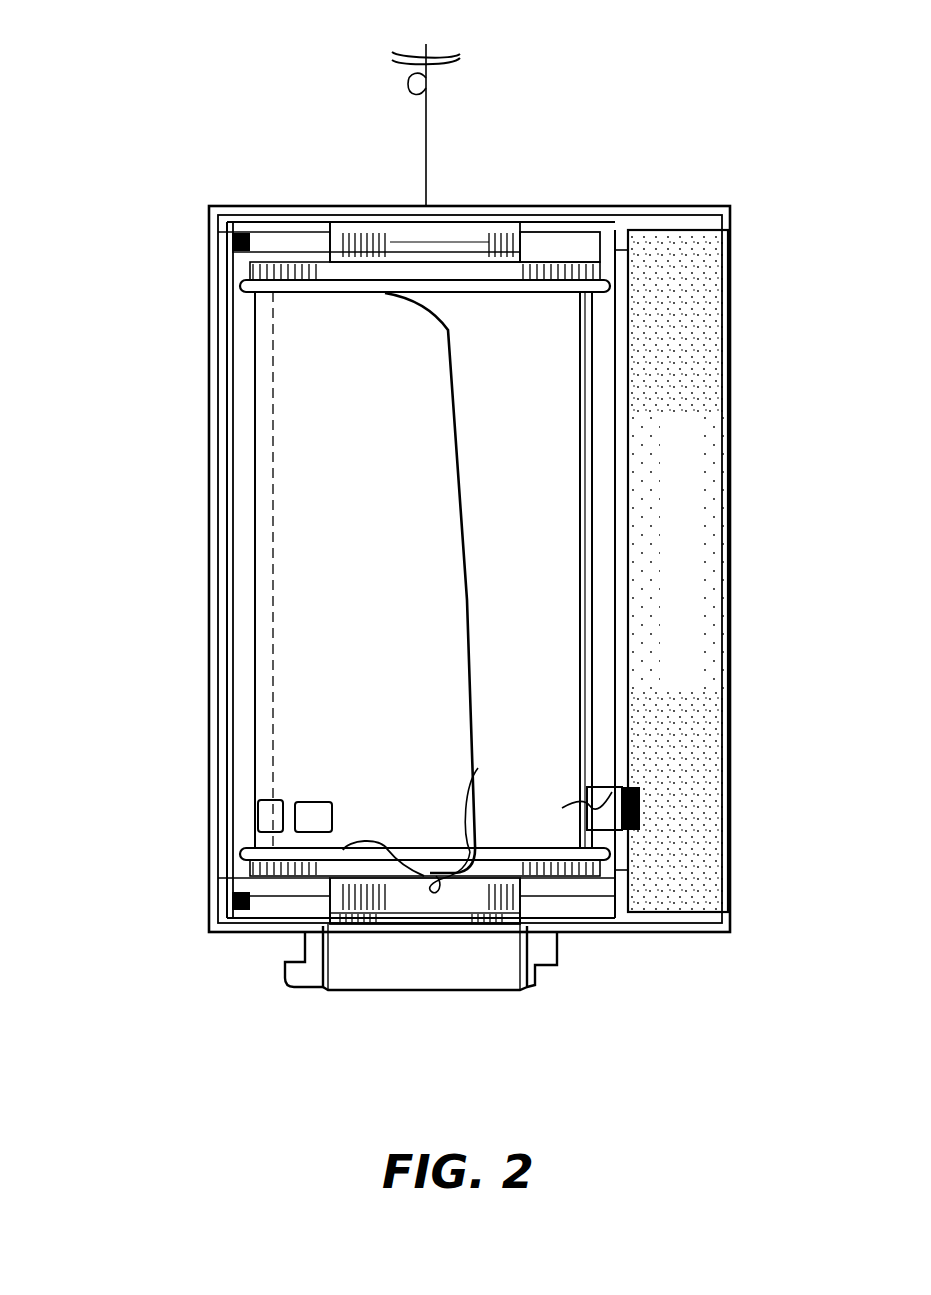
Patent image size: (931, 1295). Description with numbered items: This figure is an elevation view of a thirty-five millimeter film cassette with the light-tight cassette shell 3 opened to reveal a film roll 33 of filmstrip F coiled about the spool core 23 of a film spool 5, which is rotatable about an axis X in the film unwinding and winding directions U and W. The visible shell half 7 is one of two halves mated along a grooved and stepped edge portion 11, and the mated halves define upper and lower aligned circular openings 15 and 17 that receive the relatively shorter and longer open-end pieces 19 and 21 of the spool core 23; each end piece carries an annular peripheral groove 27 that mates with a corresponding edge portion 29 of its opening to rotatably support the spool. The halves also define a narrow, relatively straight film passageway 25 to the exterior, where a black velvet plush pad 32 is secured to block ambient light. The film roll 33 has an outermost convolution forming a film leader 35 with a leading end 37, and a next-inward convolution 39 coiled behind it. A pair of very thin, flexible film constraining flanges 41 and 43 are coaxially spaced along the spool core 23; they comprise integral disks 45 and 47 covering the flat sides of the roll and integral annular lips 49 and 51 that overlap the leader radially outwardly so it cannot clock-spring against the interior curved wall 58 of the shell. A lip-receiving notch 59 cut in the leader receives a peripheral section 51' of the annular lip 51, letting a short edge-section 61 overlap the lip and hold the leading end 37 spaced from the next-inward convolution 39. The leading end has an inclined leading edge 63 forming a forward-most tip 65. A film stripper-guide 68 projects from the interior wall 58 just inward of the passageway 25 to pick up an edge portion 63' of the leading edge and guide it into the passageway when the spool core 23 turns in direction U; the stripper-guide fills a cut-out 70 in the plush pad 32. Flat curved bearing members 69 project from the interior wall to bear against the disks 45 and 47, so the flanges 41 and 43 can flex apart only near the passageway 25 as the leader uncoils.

The cassette shell 3 is at (264, 203).
The film spool 5 is at (232, 650).
The shell half 7 is at (228, 206).
The grooved and stepped edge portion 11 is at (210, 336).
The upper circular opening 15 is at (492, 224).
The lower circular opening 17 is at (506, 930).
The shorter open-end piece 19 is at (352, 208).
The longer open-end piece 21 is at (345, 968).
The spool core 23 is at (358, 204).
The film passageway 25 is at (724, 434).
The annular peripheral groove 27 is at (400, 224).
The edge portion of opening 29 is at (488, 226).
The plush pad 32 is at (678, 300).
The film roll 33 is at (232, 597).
The film leader 35 is at (262, 506).
The leading end 37 is at (462, 612).
The next-inward convolution 39 is at (538, 540).
The upper film constraining flange 41 is at (224, 268).
The lower film constraining flange 43 is at (226, 872).
The disk 45 is at (556, 232).
The disk 47 is at (558, 888).
The annular lip 49 is at (584, 262).
The annular lip 51 is at (608, 925).
The peripheral lip section 51' is at (425, 936).
The interior curved wall 58 is at (242, 442).
The lip-receiving notch 59 is at (356, 842).
The edge-section 61 is at (436, 878).
The leading edge 63 is at (433, 583).
The edge portion of leading edge 63' is at (568, 782).
The forward-most tip 65 is at (480, 770).
The film stripper-guide 68 is at (588, 788).
The bearing member 69 is at (232, 240).
The cut-out 70 is at (634, 788).
The filmstrip F is at (286, 694).
The film winding direction W is at (403, 48).
The film unwinding direction U is at (446, 48).
The axis X is at (436, 88).